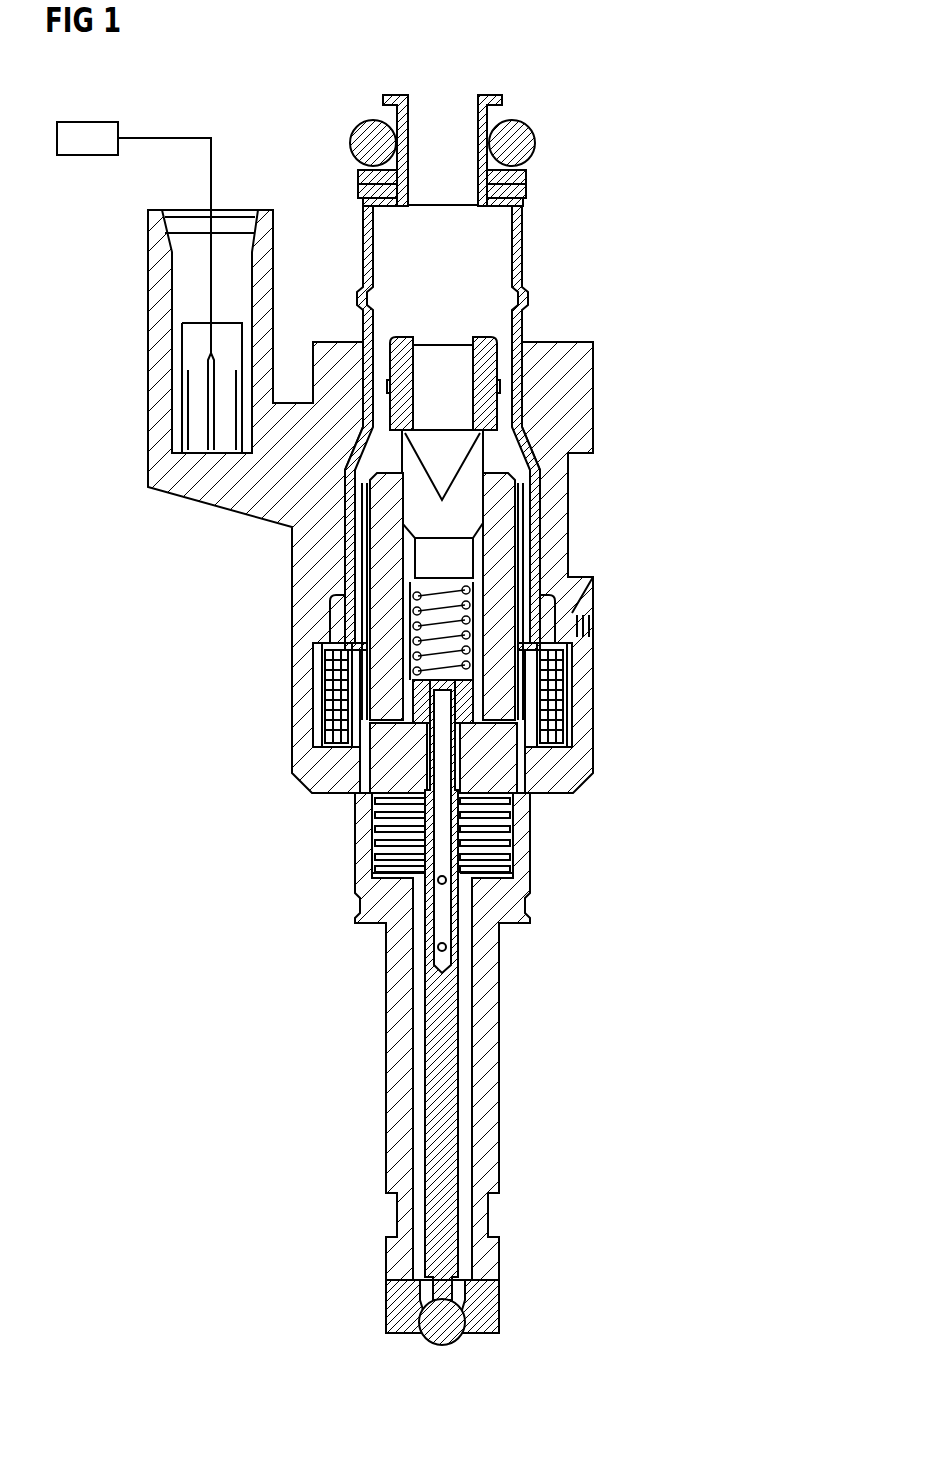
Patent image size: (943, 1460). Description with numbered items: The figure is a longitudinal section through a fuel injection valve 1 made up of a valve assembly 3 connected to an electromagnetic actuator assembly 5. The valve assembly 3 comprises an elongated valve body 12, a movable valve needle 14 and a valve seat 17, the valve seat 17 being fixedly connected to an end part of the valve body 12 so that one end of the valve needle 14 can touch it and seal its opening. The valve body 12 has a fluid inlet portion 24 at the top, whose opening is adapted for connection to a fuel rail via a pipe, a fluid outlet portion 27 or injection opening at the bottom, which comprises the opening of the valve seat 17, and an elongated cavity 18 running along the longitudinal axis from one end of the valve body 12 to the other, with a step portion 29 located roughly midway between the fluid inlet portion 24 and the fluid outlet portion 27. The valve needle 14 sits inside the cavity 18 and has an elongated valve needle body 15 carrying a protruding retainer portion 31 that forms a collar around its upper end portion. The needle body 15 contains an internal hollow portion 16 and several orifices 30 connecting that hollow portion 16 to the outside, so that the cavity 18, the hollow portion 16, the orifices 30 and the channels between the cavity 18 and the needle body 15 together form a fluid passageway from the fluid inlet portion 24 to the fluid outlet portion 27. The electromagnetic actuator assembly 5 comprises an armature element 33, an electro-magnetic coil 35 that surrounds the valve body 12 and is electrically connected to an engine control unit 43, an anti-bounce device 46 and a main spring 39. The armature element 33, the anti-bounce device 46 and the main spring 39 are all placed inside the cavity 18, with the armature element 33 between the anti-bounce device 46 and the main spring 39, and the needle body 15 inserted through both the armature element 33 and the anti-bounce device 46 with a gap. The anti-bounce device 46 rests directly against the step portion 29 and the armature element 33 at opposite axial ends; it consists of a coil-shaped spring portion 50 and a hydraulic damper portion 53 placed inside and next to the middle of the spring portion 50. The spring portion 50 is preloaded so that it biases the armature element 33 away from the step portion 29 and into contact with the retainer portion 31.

The fuel injection valve 1 is at (660, 67).
The valve assembly 3 is at (590, 197).
The electromagnetic actuator assembly 5 is at (628, 660).
The valve body 12 is at (400, 1082).
The valve needle 14 is at (540, 1075).
The valve needle body 15 is at (440, 1138).
The hollow portion 16 is at (440, 772).
The valve seat 17 is at (480, 1312).
The cavity 18 is at (470, 1020).
The fluid inlet portion 24 is at (433, 100).
The fluid outlet portion 27 is at (462, 1340).
The step portion 29 is at (380, 862).
The orifices 30 is at (450, 881).
The retainer portion 31 is at (420, 697).
The armature element 33 is at (497, 762).
The electro-magnetic coil 35 is at (548, 690).
The main spring 39 is at (455, 612).
The engine control unit 43 is at (90, 147).
The anti-bounce device 46 is at (618, 810).
The spring portion 50 is at (490, 848).
The hydraulic damper portion 53 is at (375, 805).